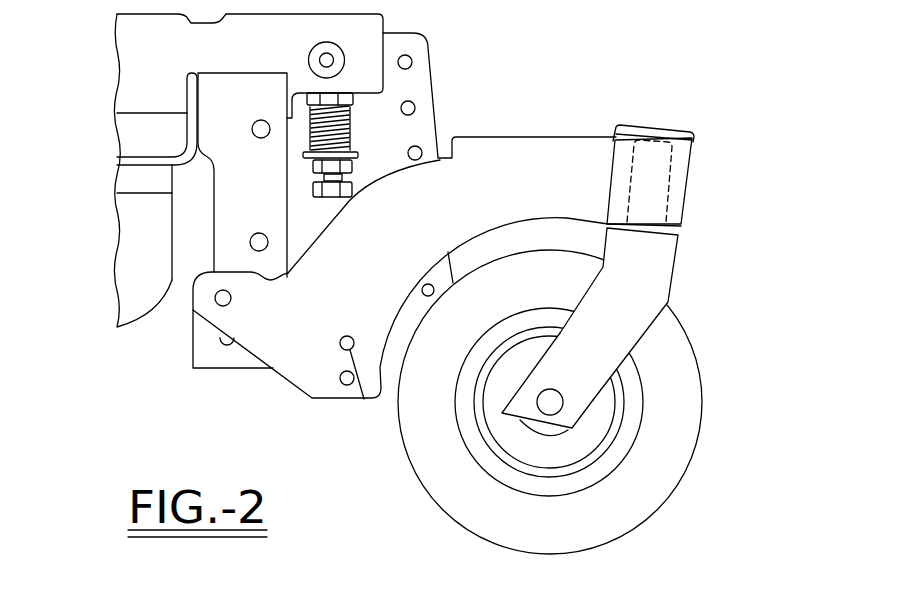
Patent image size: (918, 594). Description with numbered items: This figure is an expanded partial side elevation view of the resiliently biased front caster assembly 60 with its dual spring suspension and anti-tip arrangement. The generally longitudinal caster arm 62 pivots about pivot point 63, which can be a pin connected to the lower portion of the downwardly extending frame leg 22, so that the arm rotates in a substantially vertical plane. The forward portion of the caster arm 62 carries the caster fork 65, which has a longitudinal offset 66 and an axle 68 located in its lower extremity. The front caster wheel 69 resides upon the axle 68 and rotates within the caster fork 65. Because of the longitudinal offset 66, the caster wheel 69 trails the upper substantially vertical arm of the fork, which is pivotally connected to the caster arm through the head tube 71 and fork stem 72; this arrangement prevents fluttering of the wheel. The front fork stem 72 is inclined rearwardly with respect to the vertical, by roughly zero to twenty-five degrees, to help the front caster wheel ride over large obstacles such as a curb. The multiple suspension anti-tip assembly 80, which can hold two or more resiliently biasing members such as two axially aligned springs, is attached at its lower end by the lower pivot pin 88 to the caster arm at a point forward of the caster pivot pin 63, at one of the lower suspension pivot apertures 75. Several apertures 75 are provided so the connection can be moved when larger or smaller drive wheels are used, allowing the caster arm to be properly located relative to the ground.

The frame leg 22 is at (220, 210).
The front caster assembly 60 is at (604, 294).
The caster arm 62 is at (426, 231).
The pivot point 63 is at (223, 300).
The caster fork 65 is at (674, 272).
The longitudinal offset 66 is at (608, 360).
The axle 68 is at (555, 410).
The front caster wheel 69 is at (690, 455).
The head tube 71 is at (685, 192).
The fork stem 72 is at (704, 181).
The lower suspension pivot aperture 75 is at (363, 400).
The multiple suspension anti-tip assembly 80 is at (360, 143).
The lower pivot pin 88 is at (338, 348).